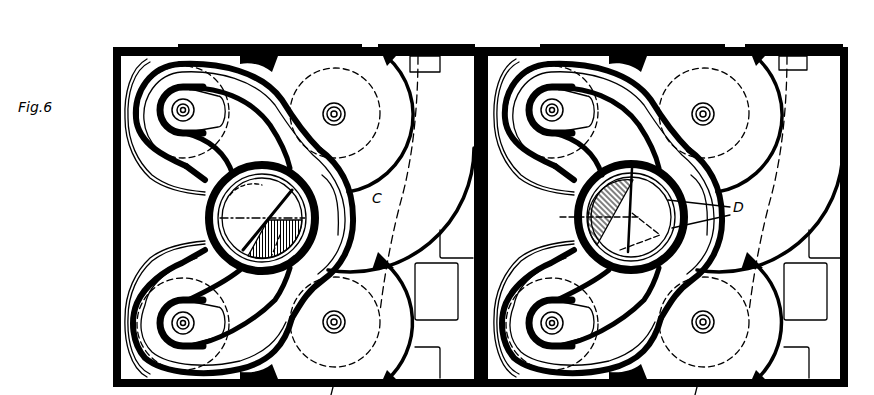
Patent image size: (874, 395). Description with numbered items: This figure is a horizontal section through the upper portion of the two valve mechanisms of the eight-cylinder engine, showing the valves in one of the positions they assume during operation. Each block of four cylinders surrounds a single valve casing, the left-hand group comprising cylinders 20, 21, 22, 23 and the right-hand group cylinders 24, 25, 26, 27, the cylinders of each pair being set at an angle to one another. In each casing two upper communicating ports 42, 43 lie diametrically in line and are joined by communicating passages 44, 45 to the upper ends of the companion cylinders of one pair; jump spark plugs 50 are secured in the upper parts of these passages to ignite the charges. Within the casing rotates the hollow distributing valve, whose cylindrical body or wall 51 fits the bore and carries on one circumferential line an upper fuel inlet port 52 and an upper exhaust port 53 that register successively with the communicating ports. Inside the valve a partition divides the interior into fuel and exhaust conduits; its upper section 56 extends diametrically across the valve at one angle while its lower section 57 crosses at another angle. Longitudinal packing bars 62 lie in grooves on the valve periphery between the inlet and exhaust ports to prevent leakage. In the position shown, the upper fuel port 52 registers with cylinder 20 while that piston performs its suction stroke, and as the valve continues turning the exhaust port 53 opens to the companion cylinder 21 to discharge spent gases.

The cylinder 20 is at (235, 346).
The cylinder 21 is at (183, 112).
The cylinder 22 is at (362, 357).
The cylinder 23 is at (370, 140).
The cylinder 24 is at (552, 324).
The cylinder 25 is at (552, 112).
The cylinder 26 is at (720, 319).
The cylinder 27 is at (720, 124).
The upper communicating port 42 is at (245, 272).
The upper communicating port 43 is at (183, 172).
The communicating passage 44 is at (210, 309).
The communicating passage 45 is at (424, 119).
The jump spark plug 50 is at (172, 118).
The cylindrical body or wall 51 is at (297, 216).
The upper fuel inlet port 52 is at (507, 234).
The upper exhaust port 53 is at (215, 185).
The upper partition section 56 is at (270, 225).
The lower partition section 57 is at (310, 190).
The longitudinal packing bar 62 is at (310, 230).